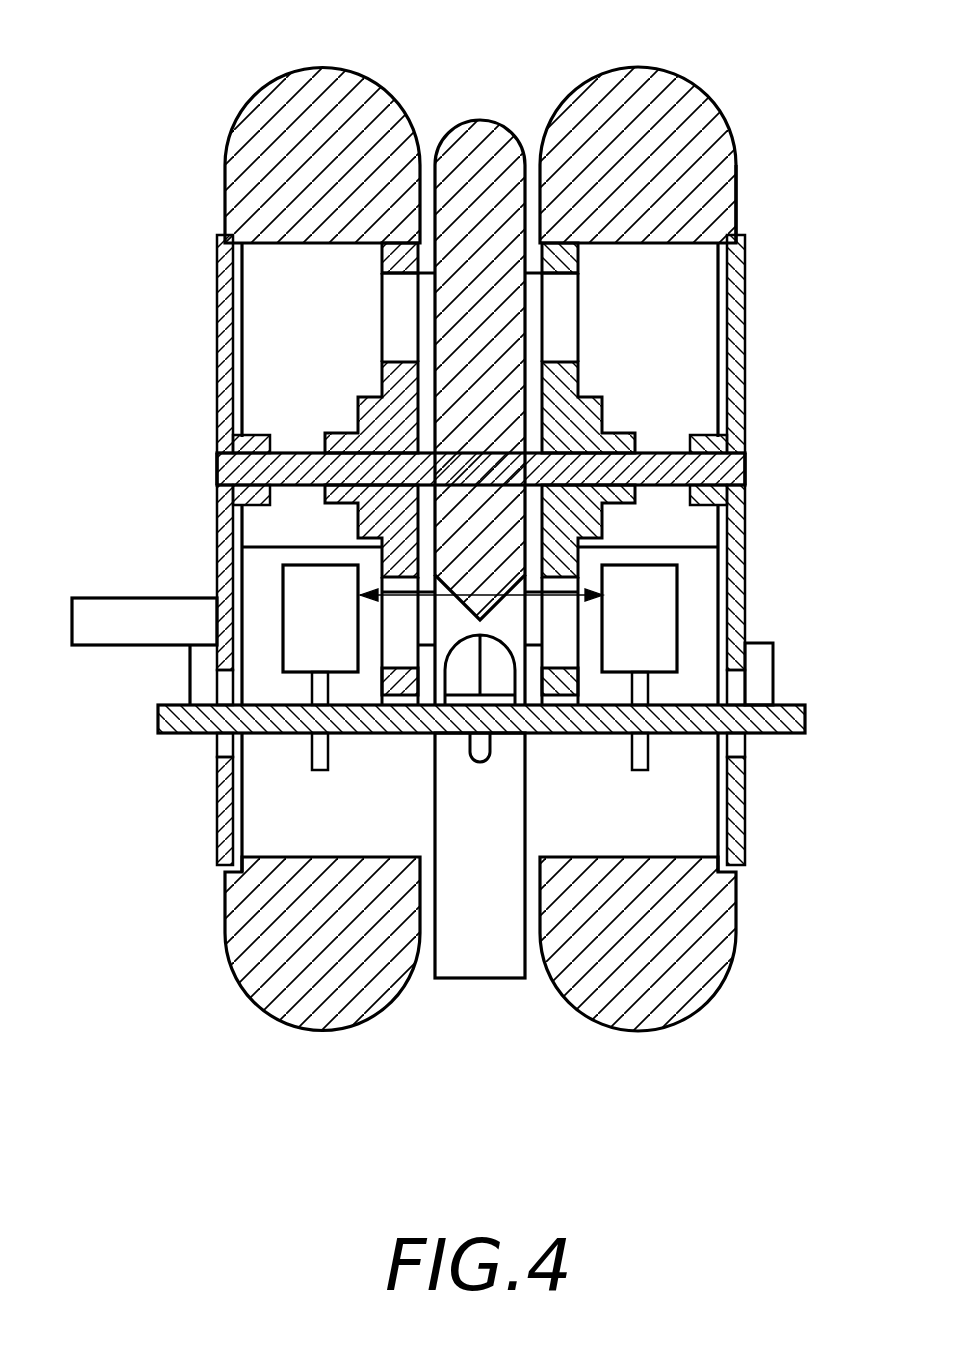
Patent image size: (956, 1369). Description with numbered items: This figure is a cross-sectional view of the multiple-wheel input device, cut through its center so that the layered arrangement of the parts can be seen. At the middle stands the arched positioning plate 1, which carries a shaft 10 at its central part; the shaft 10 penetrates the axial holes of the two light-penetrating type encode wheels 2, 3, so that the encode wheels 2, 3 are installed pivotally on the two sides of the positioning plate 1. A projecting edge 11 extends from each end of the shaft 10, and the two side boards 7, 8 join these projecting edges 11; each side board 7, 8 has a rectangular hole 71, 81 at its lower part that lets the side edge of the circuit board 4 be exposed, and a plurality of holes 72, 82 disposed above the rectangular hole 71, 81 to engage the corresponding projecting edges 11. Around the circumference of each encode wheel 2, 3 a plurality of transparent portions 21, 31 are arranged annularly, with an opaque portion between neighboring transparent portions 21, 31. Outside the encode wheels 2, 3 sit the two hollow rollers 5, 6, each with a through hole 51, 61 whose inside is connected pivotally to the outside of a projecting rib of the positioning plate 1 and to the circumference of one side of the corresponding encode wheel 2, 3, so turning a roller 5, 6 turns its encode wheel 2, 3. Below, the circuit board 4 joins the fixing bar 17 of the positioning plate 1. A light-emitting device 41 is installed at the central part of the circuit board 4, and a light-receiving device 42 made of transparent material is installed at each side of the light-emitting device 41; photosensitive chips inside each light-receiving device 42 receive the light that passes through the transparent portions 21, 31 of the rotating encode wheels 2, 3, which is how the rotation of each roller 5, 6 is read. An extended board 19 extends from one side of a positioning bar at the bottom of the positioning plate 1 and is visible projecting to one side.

The positioning plate 1 is at (467, 152).
The light-penetrating type encode wheel 2 is at (565, 388).
The light-penetrating type encode wheel 3 is at (395, 388).
The circuit board 4 is at (158, 718).
The hollow roller 5 is at (630, 90).
The hollow roller 6 is at (328, 90).
The side board 7 is at (786, 550).
The side board 8 is at (178, 550).
The shaft 10 is at (293, 457).
The projecting edge 11 is at (217, 470).
The fixing bar 17 is at (487, 762).
The extended board 19 is at (72, 598).
The transparent portion 21 is at (560, 312).
The transparent portion 31 is at (395, 312).
The light-emitting device 41 is at (497, 672).
The light-receiving device 42 is at (297, 623).
The through hole 51 is at (782, 202).
The through hole 61 is at (270, 265).
The rectangular hole 71 is at (748, 745).
The holes 72 is at (745, 500).
The rectangular hole 81 is at (228, 745).
The holes 82 is at (222, 505).